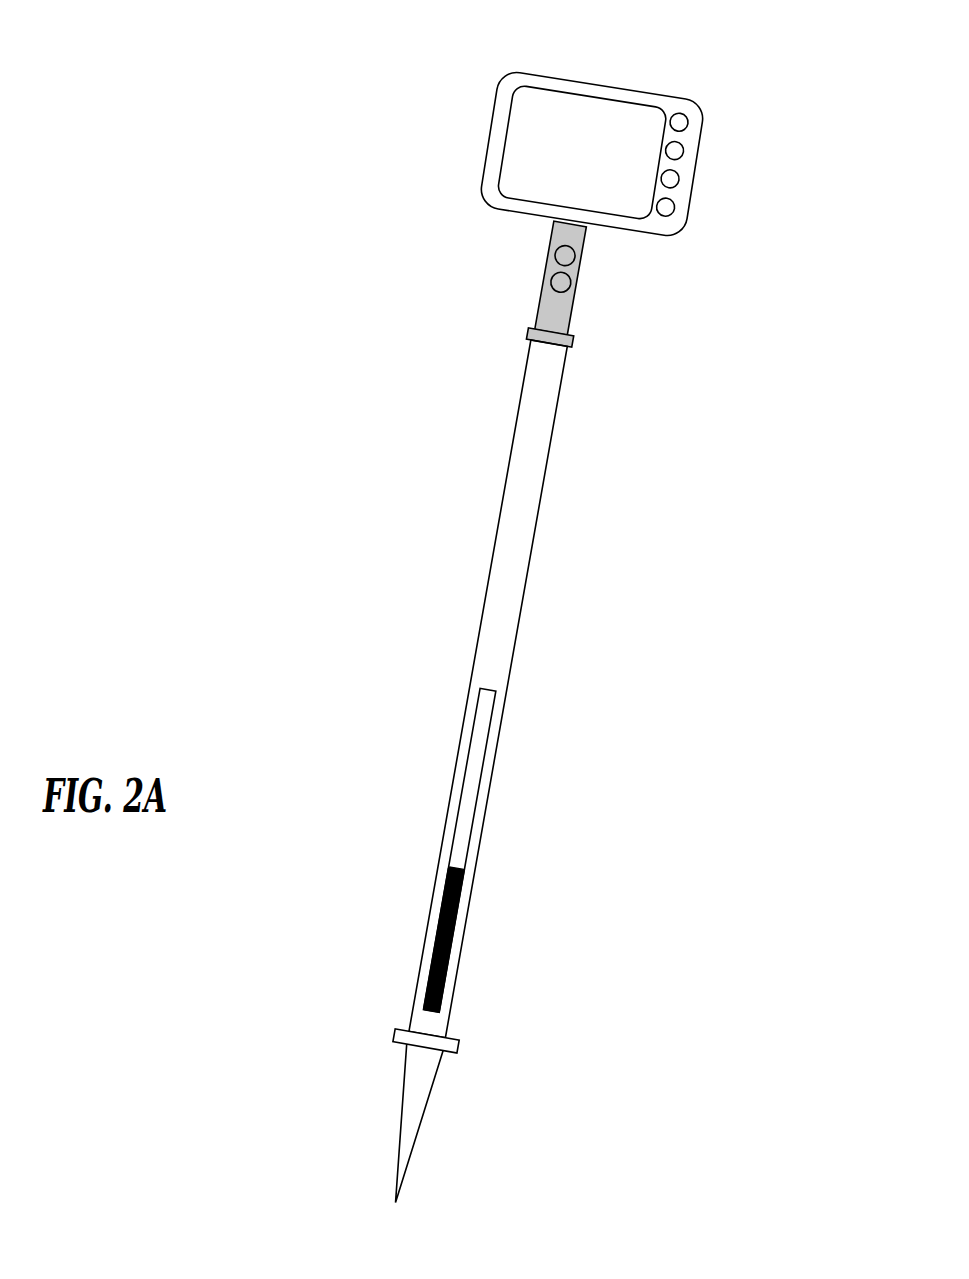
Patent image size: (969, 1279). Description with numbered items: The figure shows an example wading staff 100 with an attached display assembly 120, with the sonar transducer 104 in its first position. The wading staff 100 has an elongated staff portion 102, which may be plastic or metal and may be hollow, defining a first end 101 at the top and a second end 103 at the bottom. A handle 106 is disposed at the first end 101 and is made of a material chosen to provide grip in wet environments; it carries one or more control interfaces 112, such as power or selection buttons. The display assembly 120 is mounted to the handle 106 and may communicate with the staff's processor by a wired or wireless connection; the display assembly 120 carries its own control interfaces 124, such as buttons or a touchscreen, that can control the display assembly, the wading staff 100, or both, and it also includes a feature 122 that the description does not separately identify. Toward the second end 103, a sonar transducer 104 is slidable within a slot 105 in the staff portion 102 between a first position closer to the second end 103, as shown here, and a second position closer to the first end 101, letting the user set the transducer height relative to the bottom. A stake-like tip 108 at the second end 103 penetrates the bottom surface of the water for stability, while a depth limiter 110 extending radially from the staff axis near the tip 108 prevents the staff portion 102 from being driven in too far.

The wading staff 100 is at (415, 560).
The first end 101 is at (515, 345).
The staff portion 102 is at (503, 495).
The second end 103 is at (380, 988).
The sonar transducer 104 is at (443, 918).
The slot 105 is at (457, 813).
The handle 106 is at (553, 228).
The tip 108 is at (403, 1100).
The depth limiter 110 is at (392, 1033).
The control interfaces 112 is at (552, 260).
The display assembly 120 is at (513, 65).
The display screen 122 is at (522, 125).
The control interfaces 124 is at (688, 125).